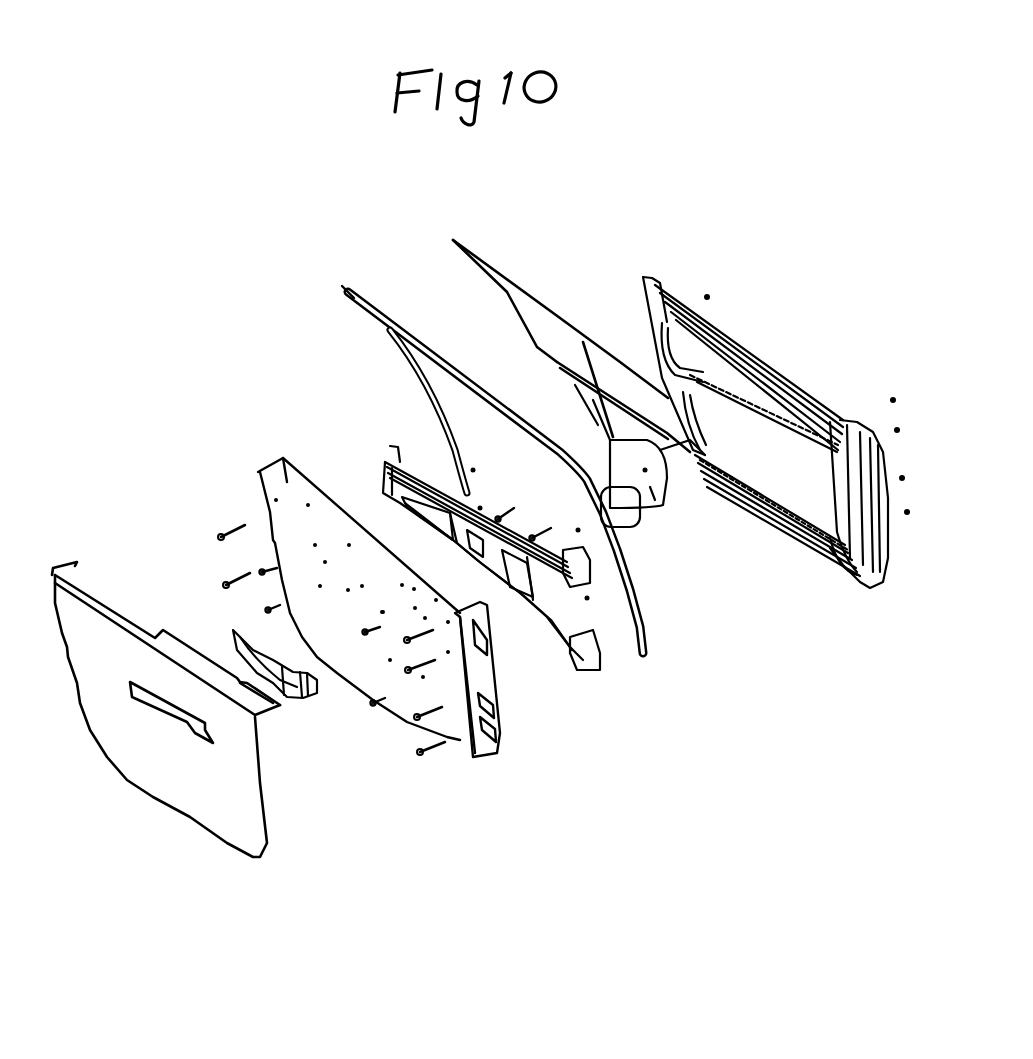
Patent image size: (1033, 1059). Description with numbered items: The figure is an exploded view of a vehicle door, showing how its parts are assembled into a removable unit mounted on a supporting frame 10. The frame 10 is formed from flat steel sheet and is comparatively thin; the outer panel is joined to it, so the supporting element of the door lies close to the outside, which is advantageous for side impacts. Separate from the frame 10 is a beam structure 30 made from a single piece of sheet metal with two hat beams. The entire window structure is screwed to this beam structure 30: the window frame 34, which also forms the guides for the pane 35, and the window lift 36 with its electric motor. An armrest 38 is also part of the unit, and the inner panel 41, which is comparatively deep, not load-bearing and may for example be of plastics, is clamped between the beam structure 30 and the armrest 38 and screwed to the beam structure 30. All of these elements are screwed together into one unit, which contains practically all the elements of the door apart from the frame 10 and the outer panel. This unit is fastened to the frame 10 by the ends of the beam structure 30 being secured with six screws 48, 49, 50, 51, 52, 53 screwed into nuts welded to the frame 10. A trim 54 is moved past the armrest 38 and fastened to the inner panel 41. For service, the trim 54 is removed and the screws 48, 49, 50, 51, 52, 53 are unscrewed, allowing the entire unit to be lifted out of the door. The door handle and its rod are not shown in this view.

The frame 10 is at (748, 353).
The beam structure 30 is at (600, 660).
The window frame 34 is at (634, 594).
The pane 35 is at (512, 278).
The window lift 36 is at (660, 498).
The armrest 38 is at (303, 697).
The inner panel 41 is at (407, 707).
The screw 48 is at (430, 636).
The screw 49 is at (435, 663).
The screw 50 is at (445, 712).
The screw 51 is at (430, 753).
The screw 52 is at (232, 523).
The screw 53 is at (237, 577).
The trim 54 is at (198, 805).